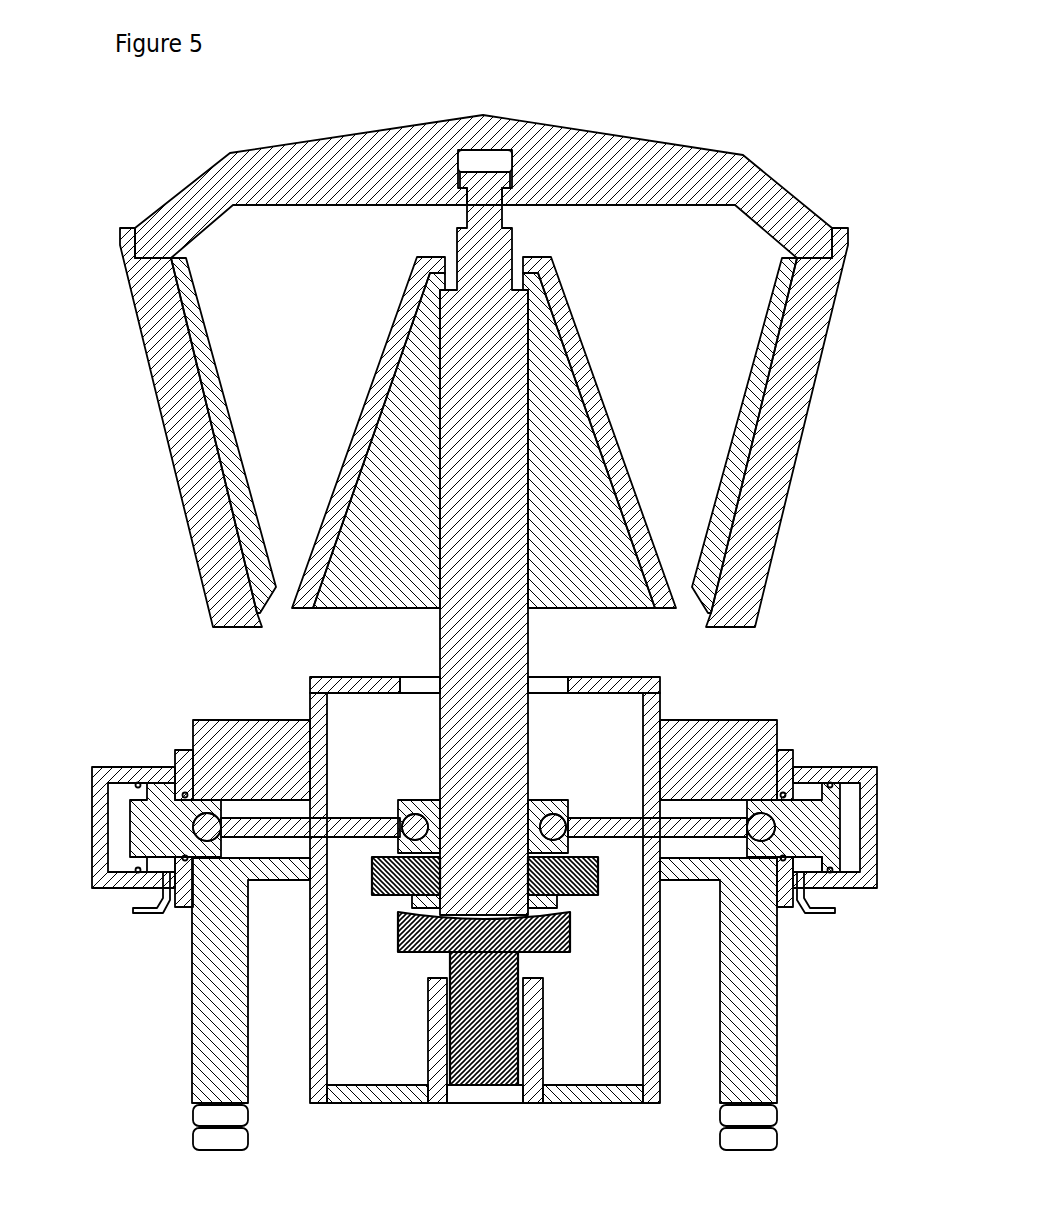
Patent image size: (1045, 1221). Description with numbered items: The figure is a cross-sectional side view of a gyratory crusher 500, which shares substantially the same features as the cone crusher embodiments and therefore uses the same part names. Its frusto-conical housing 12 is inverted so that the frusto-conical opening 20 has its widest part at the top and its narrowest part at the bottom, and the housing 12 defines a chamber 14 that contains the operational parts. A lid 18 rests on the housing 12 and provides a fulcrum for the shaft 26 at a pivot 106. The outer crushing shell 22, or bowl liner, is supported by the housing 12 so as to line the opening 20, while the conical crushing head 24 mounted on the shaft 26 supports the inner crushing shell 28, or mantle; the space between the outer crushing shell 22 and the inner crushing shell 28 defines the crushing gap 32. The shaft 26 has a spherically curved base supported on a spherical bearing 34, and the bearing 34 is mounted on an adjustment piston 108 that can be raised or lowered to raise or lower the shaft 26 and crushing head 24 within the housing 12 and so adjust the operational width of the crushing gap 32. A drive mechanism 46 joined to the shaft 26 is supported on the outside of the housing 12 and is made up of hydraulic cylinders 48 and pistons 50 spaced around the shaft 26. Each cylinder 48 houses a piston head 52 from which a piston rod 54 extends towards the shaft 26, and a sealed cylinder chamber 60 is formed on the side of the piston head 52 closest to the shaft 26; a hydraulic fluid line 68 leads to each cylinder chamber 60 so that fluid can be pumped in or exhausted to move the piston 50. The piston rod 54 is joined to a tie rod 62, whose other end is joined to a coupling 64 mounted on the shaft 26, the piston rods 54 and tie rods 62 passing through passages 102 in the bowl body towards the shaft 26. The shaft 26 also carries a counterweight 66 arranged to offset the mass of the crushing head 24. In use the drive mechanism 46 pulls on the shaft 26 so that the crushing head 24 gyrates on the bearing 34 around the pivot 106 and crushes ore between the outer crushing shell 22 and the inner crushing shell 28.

The housing 12 is at (770, 567).
The chamber 14 is at (713, 375).
The lid 18 is at (274, 173).
The frusto-conical opening 20 is at (678, 262).
The outer crushing shell 22 is at (203, 363).
The crushing head 24 is at (382, 568).
The shaft 26 is at (493, 260).
The inner crushing shell 28 is at (307, 543).
The crushing gap 32 is at (278, 498).
The spherical bearing 34 is at (543, 917).
The drive mechanism 46 is at (857, 897).
The hydraulic cylinder 48 is at (120, 888).
The piston 50 is at (124, 842).
The piston head 52 is at (133, 820).
The piston rod 54 is at (162, 805).
The cylinder chamber 60 is at (159, 869).
The tie rod 62 is at (368, 823).
The coupling 64 is at (550, 798).
The counterweight 66 is at (572, 878).
The hydraulic fluid line 68 is at (157, 912).
The passage 102 is at (350, 870).
The pivot 106 is at (483, 197).
The adjustment piston 108 is at (480, 1065).
The gyratory crusher 500 is at (936, 189).